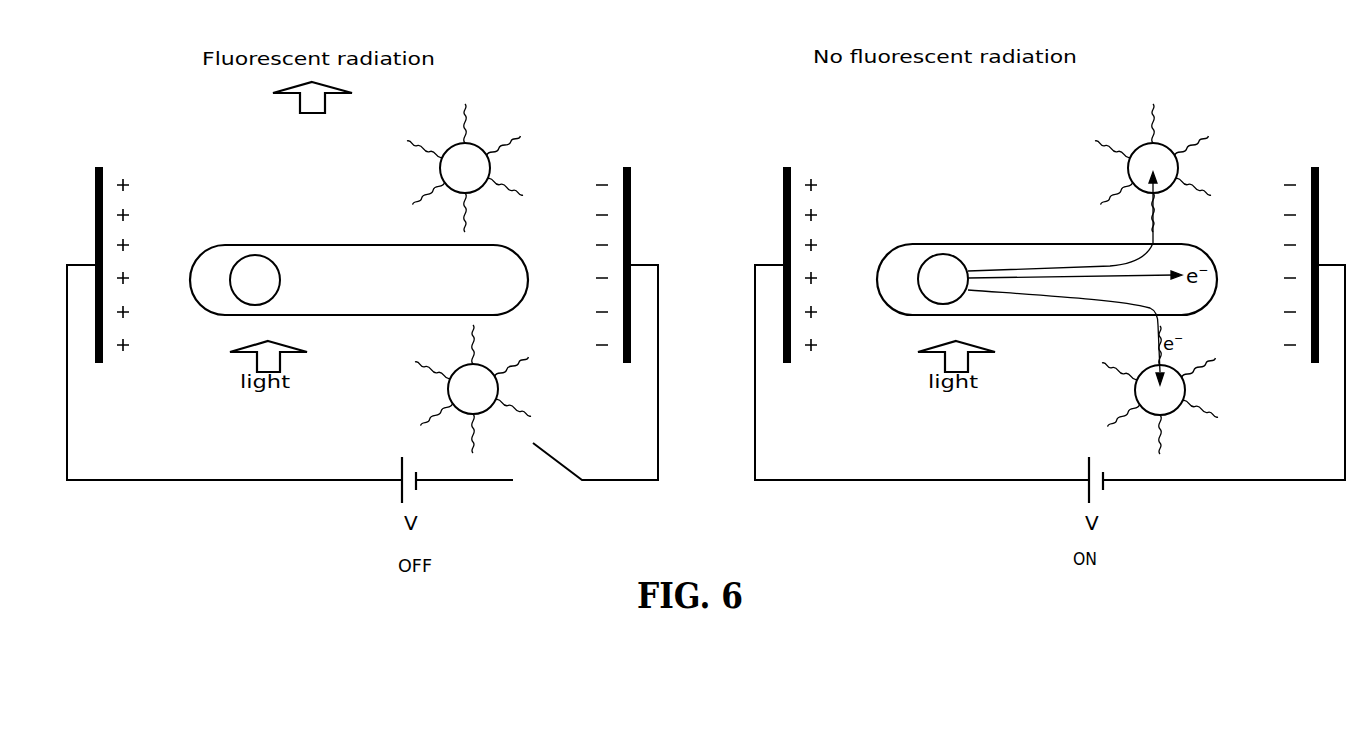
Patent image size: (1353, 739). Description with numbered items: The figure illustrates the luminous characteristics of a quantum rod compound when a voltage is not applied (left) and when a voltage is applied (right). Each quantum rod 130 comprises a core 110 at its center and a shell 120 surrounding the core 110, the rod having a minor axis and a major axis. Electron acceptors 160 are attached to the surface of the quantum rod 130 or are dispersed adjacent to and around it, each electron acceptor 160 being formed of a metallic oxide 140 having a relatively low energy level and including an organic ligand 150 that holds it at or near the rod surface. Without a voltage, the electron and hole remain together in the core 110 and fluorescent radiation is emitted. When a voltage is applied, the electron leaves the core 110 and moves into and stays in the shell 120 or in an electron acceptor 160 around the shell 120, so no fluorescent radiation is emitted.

The core 110 is at (258, 270).
The shell 120 is at (310, 270).
The quantum rod 130 is at (283, 161).
The metallic oxide 140 is at (472, 152).
The organic ligand 150 is at (498, 146).
The electron acceptor 160 is at (540, 47).